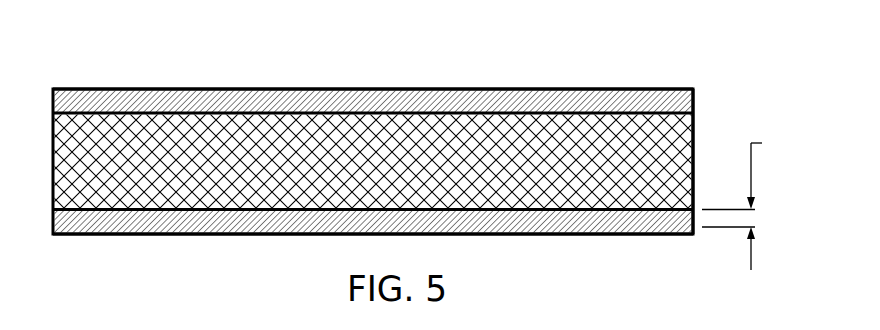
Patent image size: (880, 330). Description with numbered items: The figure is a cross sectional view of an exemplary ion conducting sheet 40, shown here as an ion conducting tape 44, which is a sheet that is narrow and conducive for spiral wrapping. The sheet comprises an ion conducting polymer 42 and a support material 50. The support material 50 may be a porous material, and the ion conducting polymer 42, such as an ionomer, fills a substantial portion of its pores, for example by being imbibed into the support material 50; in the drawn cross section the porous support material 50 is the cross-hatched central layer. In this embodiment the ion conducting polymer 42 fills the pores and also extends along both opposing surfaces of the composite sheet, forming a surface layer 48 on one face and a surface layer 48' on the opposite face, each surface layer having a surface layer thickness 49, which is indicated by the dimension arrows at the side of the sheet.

The ion conducting sheet 40 is at (686, 80).
The ion conducting polymer 42 is at (526, 112).
The ion conducting tape 44 is at (242, 112).
The surface layer 48 is at (373, 56).
The surface layer 48' is at (380, 281).
The surface layer thickness 49 is at (748, 201).
The support material 50 is at (697, 149).